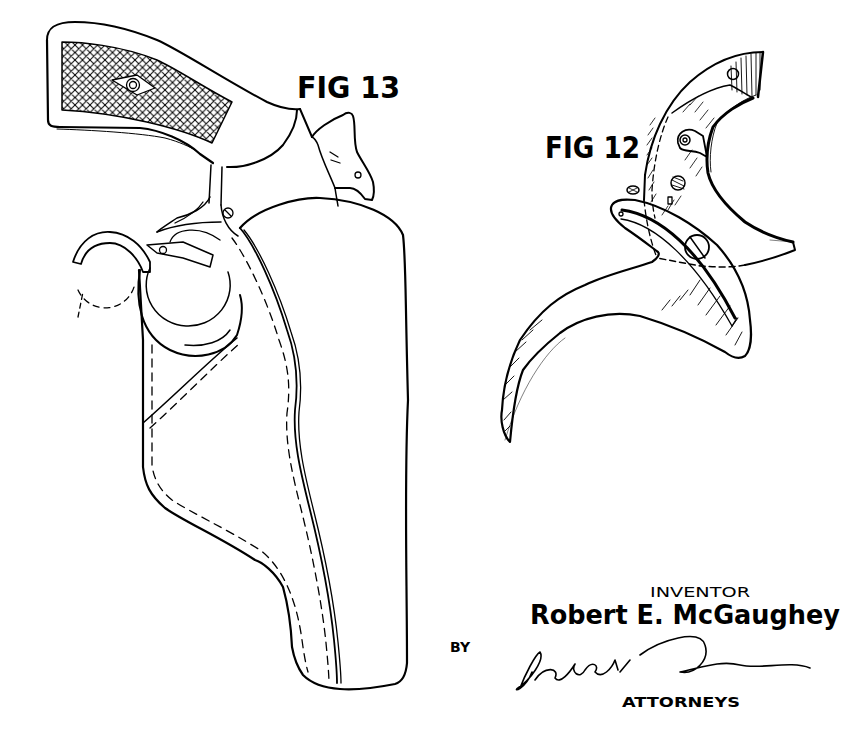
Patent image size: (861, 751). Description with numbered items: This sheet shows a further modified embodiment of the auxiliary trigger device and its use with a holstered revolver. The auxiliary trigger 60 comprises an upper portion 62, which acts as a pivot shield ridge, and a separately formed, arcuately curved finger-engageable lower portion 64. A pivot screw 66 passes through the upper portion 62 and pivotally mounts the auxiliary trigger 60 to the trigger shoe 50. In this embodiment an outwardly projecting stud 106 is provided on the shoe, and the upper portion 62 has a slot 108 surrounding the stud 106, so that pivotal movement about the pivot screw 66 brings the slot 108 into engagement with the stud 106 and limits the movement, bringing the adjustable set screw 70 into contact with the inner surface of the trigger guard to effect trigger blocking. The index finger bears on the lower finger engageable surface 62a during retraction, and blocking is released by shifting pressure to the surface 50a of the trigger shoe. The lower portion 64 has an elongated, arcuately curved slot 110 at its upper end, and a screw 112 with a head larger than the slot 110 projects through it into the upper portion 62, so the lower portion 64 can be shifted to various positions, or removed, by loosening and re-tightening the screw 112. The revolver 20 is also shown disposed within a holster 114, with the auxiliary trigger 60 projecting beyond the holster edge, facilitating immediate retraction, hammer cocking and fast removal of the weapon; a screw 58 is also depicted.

In FIG. 13, the revolver 20 is at (252, 86).
In FIG. 13, the auxiliary trigger 60 is at (90, 255).
In FIG. 12, the auxiliary trigger 60 is at (566, 340).
In FIG. 13, the holster 114 is at (405, 488).
In FIG. 12, the shoe 50 is at (755, 101).
In FIG. 12, the surface of the trigger shoe 50a is at (723, 113).
In FIG. 12, the screw 58 is at (731, 68).
In FIG. 12, the upper portion 62 is at (653, 143).
In FIG. 12, the lower finger engageable surface 62a is at (753, 225).
In FIG. 12, the lower portion 64 is at (508, 357).
In FIG. 12, the pivot screw 66 is at (686, 184).
In FIG. 12, the adjustable set screw 70 is at (627, 189).
In FIG. 12, the stud 106 is at (702, 144).
In FIG. 12, the slot 108 is at (681, 134).
In FIG. 12, the arcuately curved slot 110 is at (616, 218).
In FIG. 12, the screw 112 is at (690, 260).